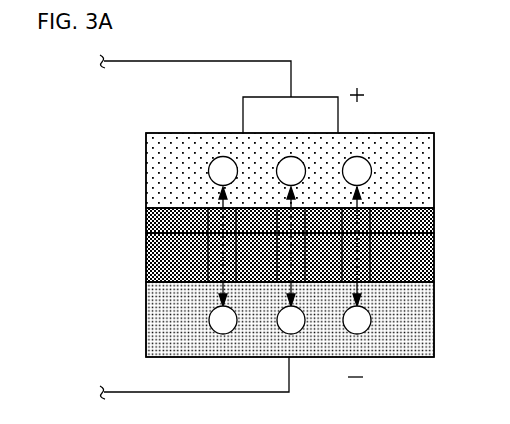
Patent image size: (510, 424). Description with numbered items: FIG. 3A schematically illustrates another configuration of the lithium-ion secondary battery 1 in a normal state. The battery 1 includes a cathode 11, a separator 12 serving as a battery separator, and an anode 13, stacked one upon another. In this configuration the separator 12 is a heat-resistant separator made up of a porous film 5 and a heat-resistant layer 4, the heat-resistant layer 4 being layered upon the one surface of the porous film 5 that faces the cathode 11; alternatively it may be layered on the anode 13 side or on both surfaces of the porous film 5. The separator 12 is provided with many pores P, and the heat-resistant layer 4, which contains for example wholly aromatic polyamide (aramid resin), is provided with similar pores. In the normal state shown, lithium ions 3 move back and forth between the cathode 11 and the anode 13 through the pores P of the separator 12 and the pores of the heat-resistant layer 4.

The lithium-ion secondary battery 1 is at (50, 133).
The cathode 11 is at (146, 171).
The separator 12 is at (98, 210).
The heat-resistant layer 4 is at (146, 222).
The porous film 5 is at (146, 265).
The anode 13 is at (146, 320).
The lithium ions 3 is at (228, 160).
The pores P is at (233, 233).